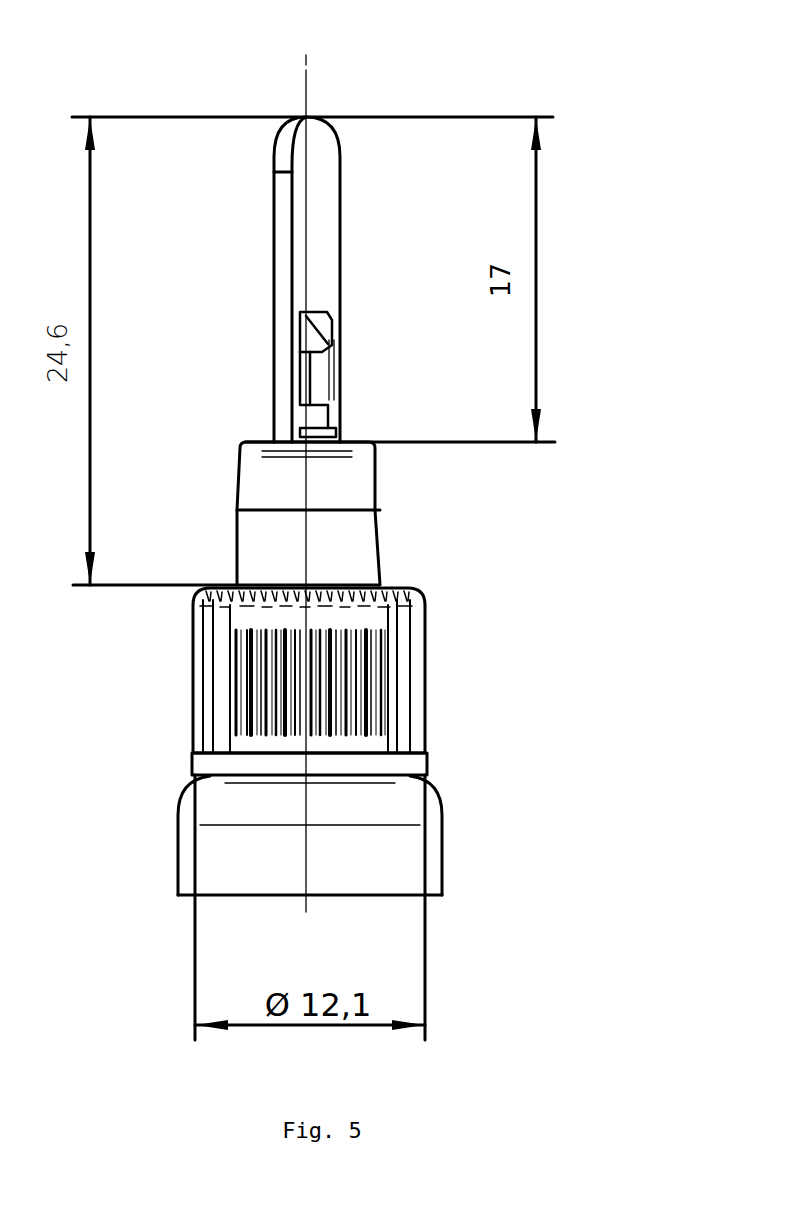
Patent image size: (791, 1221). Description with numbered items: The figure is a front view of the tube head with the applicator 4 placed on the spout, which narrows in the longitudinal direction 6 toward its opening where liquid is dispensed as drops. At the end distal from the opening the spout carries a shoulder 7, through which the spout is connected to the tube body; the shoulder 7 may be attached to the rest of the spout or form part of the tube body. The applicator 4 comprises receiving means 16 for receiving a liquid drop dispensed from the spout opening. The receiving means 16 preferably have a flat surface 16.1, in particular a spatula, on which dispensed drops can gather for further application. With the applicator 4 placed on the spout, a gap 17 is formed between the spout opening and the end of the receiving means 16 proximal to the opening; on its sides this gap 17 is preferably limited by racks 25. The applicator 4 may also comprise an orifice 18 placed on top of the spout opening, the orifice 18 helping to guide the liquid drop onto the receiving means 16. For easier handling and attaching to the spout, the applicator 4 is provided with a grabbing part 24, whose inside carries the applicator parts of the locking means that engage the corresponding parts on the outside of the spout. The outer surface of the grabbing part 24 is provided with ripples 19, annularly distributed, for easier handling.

The applicator 4 is at (412, 93).
The receiving means 16 is at (340, 175).
The flat surface 16.1 is at (313, 243).
The gap 17 is at (335, 363).
The orifice 18 is at (335, 416).
The racks 25 is at (285, 371).
The longitudinal direction 6 is at (310, 548).
The ripples 19 is at (193, 683).
The grabbing part 24 is at (430, 697).
The shoulder 7 is at (442, 843).